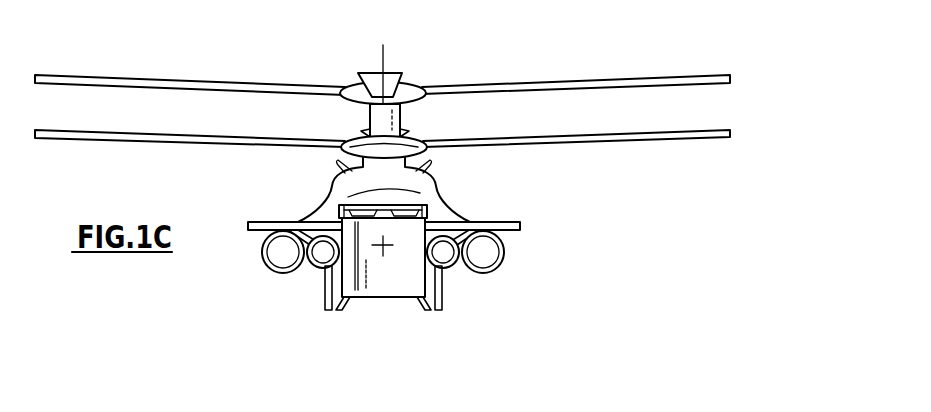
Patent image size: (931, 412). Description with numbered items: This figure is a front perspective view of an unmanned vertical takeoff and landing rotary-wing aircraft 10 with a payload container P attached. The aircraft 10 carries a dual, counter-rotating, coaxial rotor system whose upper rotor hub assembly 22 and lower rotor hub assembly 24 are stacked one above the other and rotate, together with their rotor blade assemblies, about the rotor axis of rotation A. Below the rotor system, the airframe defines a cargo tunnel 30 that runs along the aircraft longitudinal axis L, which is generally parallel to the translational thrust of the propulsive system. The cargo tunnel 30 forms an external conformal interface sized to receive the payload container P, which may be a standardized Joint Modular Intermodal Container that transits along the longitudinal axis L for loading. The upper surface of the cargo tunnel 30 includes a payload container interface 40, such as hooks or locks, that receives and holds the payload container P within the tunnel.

The rotary-wing aircraft 10 is at (744, 117).
The upper rotor hub assembly 22 is at (410, 90).
The lower rotor hub assembly 24 is at (414, 147).
The payload container interface 40 is at (392, 210).
The cargo tunnel 30 is at (431, 278).
The axis of rotation A is at (384, 63).
The longitudinal axis L is at (386, 248).
The payload container P is at (375, 279).